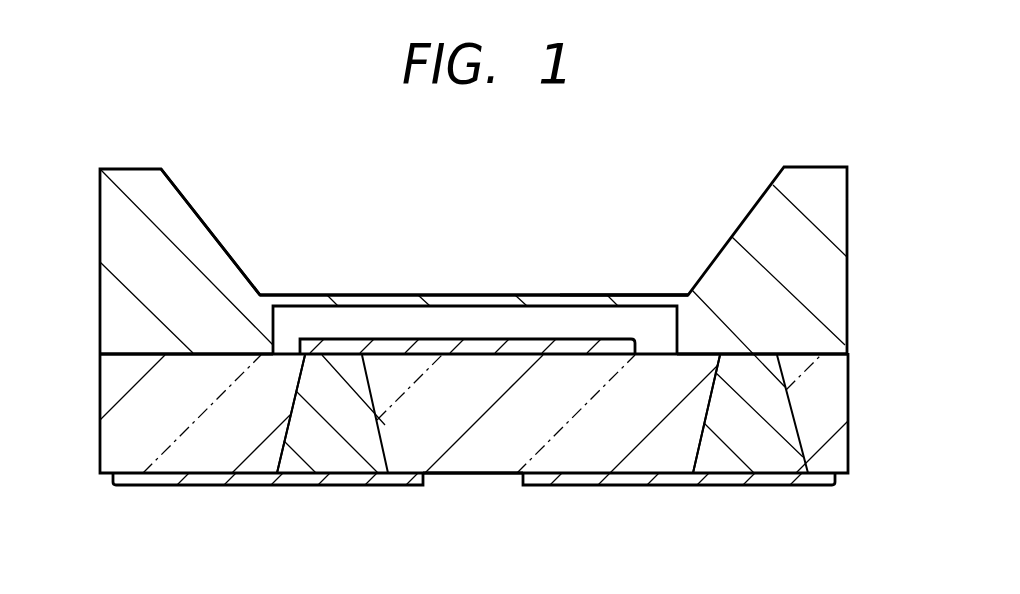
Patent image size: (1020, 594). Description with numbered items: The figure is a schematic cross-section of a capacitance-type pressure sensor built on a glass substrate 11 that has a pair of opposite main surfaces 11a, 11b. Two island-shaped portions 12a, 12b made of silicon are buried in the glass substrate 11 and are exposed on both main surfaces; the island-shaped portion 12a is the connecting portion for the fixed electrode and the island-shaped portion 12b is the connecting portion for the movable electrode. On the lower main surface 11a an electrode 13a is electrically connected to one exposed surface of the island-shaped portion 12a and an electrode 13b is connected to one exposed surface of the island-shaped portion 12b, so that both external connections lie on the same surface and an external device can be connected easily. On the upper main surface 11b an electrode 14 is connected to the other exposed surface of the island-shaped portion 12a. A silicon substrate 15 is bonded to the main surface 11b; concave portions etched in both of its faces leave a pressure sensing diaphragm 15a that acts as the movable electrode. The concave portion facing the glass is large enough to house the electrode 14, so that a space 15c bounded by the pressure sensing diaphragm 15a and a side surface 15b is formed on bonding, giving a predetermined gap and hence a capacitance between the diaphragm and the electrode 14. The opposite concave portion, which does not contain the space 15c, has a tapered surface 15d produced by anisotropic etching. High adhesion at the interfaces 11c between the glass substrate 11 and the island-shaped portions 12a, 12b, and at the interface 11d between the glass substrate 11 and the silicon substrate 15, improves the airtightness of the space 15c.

The glass substrate 11 is at (828, 412).
The main surface 11a is at (465, 475).
The main surface 11b is at (797, 353).
The interface 11c is at (292, 414).
The interface 11d is at (156, 358).
The island-shaped portion 12a is at (352, 450).
The island-shaped portion 12b is at (770, 455).
The electrode 13a is at (202, 478).
The electrode 13b is at (662, 477).
The electrode 14 is at (528, 335).
The silicon substrate 15 is at (832, 262).
The pressure sensing diaphragm 15a is at (622, 293).
The side surface 15b is at (278, 323).
The space 15c is at (428, 320).
The tapered surface 15d is at (185, 193).